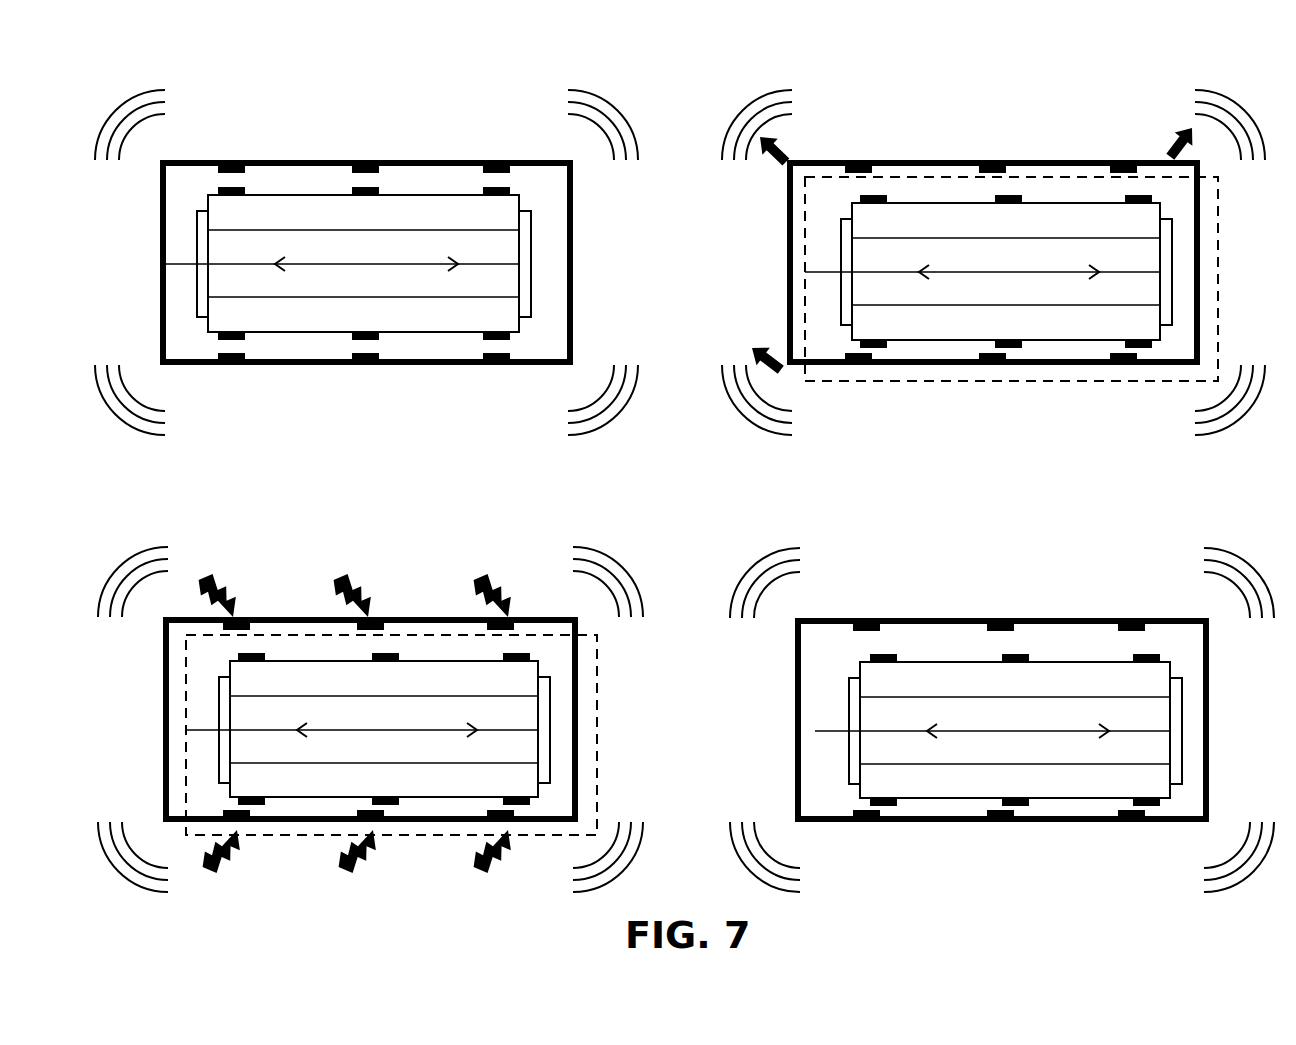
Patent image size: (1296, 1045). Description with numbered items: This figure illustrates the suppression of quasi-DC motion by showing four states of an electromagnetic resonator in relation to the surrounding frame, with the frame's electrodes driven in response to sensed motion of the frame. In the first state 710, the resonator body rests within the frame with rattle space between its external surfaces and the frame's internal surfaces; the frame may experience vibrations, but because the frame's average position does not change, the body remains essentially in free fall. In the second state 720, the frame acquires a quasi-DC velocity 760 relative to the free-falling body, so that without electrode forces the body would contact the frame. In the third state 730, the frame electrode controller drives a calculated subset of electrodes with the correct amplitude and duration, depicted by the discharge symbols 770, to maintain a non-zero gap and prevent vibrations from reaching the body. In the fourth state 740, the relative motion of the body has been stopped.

The first state 710 is at (183, 74).
The second state 720 is at (808, 74).
The third state 730 is at (184, 531).
The fourth state 740 is at (815, 531).
The quasi-DC velocity 760 is at (1172, 140).
The lightning bolt discharge indicators 770 is at (495, 593).